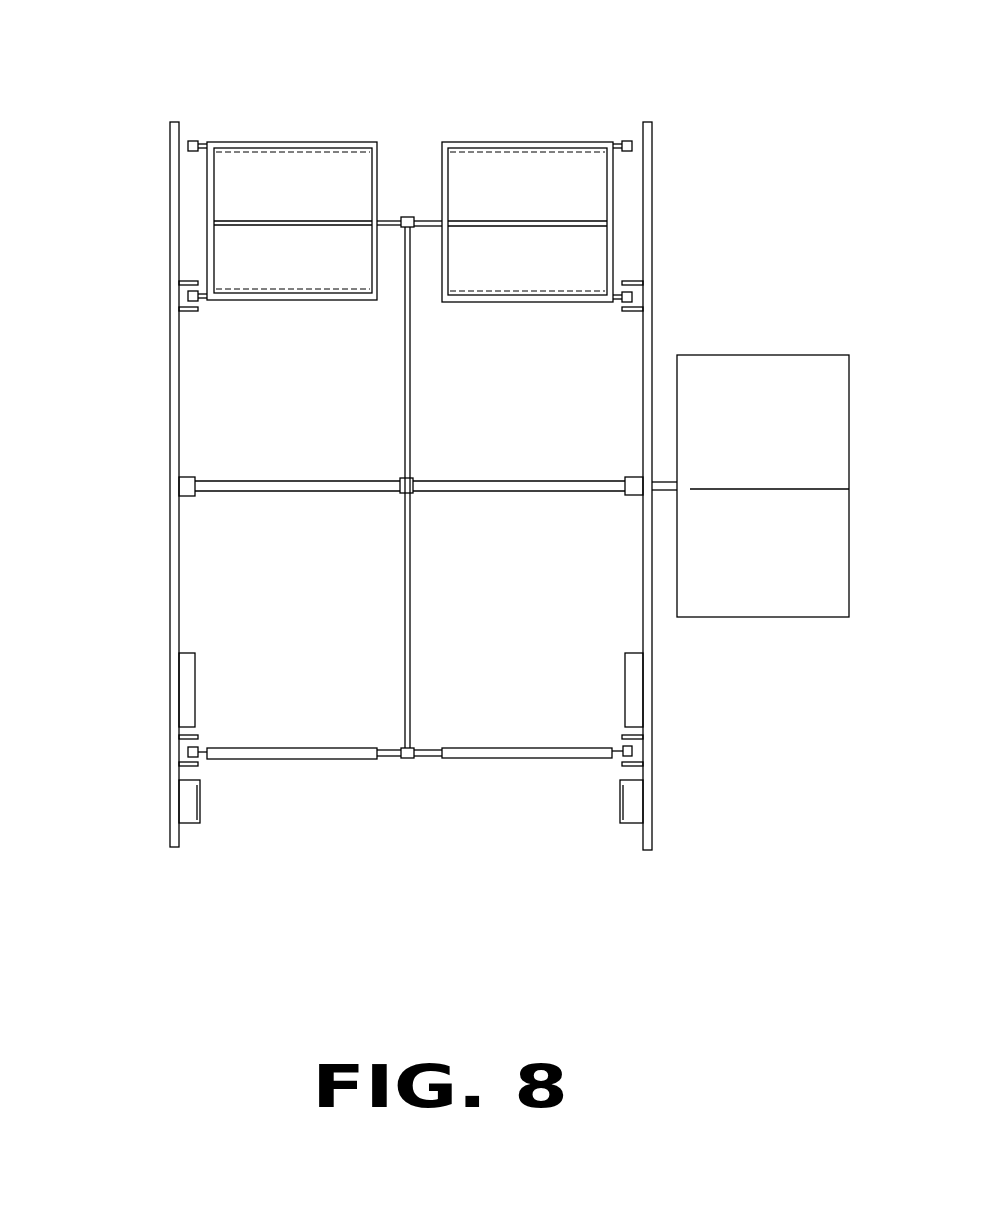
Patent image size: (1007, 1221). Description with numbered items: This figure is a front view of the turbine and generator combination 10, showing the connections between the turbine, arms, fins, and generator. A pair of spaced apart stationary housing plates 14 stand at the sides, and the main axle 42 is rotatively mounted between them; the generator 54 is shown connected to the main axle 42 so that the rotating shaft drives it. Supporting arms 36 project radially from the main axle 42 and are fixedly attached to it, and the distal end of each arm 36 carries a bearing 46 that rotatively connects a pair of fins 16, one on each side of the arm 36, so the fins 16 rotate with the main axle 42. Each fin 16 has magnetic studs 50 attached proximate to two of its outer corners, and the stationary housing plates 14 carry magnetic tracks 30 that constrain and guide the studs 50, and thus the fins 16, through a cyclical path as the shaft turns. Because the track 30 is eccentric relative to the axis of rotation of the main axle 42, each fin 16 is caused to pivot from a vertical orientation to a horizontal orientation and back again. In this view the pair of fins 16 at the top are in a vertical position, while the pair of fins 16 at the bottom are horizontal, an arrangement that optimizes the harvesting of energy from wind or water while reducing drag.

The turbine and generator 10 is at (766, 70).
The stationary housing plate 14 is at (170, 362).
The fin 16 is at (260, 142).
The magnetic track 30 is at (632, 282).
The arm 36 is at (405, 386).
The main axle 42 is at (237, 492).
The bearing 46 is at (409, 748).
The magnetic stud 50 is at (185, 752).
The generator 54 is at (778, 462).